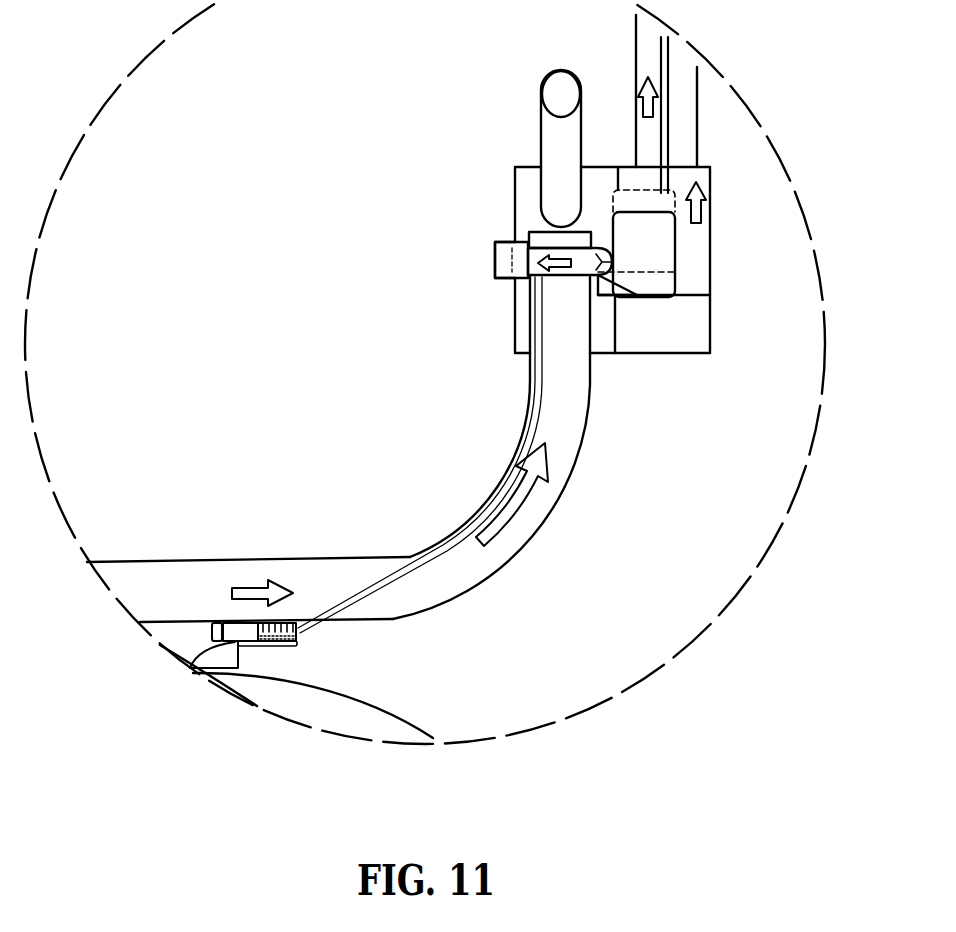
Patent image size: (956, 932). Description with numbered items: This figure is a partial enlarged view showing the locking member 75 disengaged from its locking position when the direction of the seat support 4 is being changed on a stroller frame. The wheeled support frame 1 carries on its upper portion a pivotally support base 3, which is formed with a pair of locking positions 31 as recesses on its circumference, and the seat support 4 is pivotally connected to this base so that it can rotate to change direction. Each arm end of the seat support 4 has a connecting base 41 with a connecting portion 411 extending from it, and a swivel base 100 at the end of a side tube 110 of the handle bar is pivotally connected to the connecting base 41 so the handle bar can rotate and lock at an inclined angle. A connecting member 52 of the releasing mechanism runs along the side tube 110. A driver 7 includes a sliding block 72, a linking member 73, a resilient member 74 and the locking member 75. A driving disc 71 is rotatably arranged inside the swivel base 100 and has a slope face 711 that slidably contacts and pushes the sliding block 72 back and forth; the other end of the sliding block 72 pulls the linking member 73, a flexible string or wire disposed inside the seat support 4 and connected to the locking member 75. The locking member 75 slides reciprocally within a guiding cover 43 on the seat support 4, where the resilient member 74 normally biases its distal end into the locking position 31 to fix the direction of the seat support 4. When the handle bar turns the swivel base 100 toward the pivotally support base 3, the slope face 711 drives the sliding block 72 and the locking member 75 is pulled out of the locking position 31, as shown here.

The wheeled support frame 1 is at (452, 717).
The pivotally support base 3 is at (140, 623).
The locking position 31 is at (207, 630).
The seat support 4 is at (560, 528).
The connecting base 41 is at (515, 195).
The connecting portion 411 is at (541, 118).
The guiding cover 43 is at (333, 625).
The connecting member 52 is at (668, 115).
The driver 7 is at (612, 372).
The driving disc 71 is at (675, 294).
The slope face 711 is at (620, 287).
The sliding block 72 is at (527, 255).
The linking member 73 is at (437, 553).
The resilient member 74 is at (292, 646).
The locking member 75 is at (192, 668).
The swivel base 100 is at (703, 268).
The side tube 110 is at (697, 68).